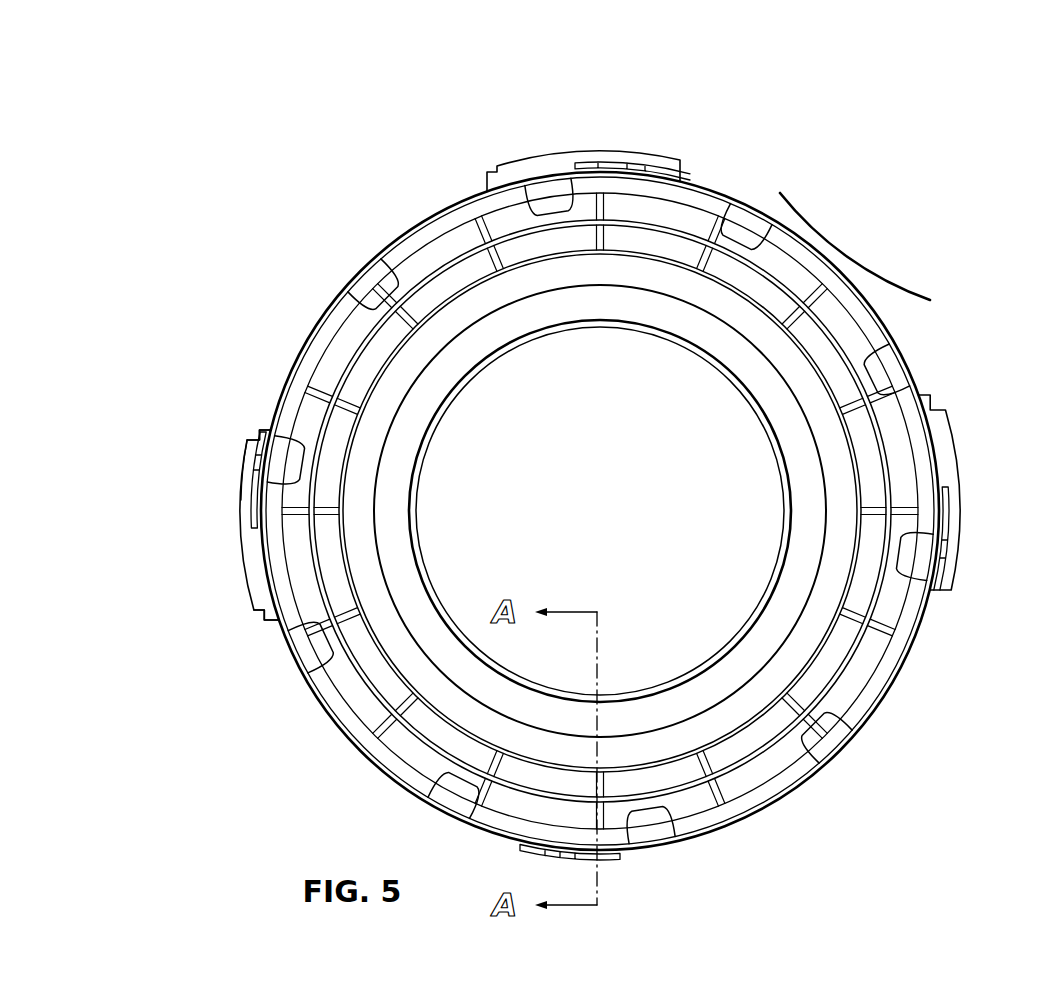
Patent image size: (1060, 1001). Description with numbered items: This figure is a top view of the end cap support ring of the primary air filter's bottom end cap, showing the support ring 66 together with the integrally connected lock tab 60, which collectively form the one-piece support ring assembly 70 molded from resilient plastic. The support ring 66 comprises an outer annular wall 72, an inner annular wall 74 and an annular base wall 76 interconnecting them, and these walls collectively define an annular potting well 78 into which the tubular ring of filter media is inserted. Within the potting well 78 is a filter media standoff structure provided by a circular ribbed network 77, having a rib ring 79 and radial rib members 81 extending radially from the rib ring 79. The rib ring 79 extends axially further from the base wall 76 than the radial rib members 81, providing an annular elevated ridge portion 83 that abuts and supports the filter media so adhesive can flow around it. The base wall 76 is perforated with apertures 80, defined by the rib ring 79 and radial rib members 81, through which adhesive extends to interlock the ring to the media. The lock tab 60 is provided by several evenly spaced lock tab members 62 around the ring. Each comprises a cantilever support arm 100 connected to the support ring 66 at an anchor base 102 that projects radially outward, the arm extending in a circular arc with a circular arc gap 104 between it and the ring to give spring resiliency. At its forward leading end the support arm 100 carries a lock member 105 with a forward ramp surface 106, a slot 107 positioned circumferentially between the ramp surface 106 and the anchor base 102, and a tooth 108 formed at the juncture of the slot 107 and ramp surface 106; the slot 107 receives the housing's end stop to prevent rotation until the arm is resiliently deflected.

The lock tab 60 is at (960, 425).
The lock tab members 62 is at (535, 160).
The support ring 66 is at (797, 165).
The support ring assembly 70 is at (825, 245).
The outer annular wall 72 is at (305, 340).
The inner annular wall 74 is at (438, 413).
The annular base wall 76 is at (493, 280).
The circular ribbed network 77 is at (820, 307).
The annular potting well 78 is at (415, 240).
The rib ring 79 is at (872, 412).
The apertures 80 is at (415, 303).
The radial rib members 81 is at (503, 213).
The annular elevated ridge portion 83 is at (862, 395).
The cantilever support arm 100 is at (247, 580).
The anchor base 102 is at (260, 618).
The circular arc gap 104 is at (703, 177).
The lock member 105 is at (222, 437).
The forward ramp surface 106 is at (256, 430).
The slot 107 is at (247, 480).
The tooth 108 is at (250, 463).